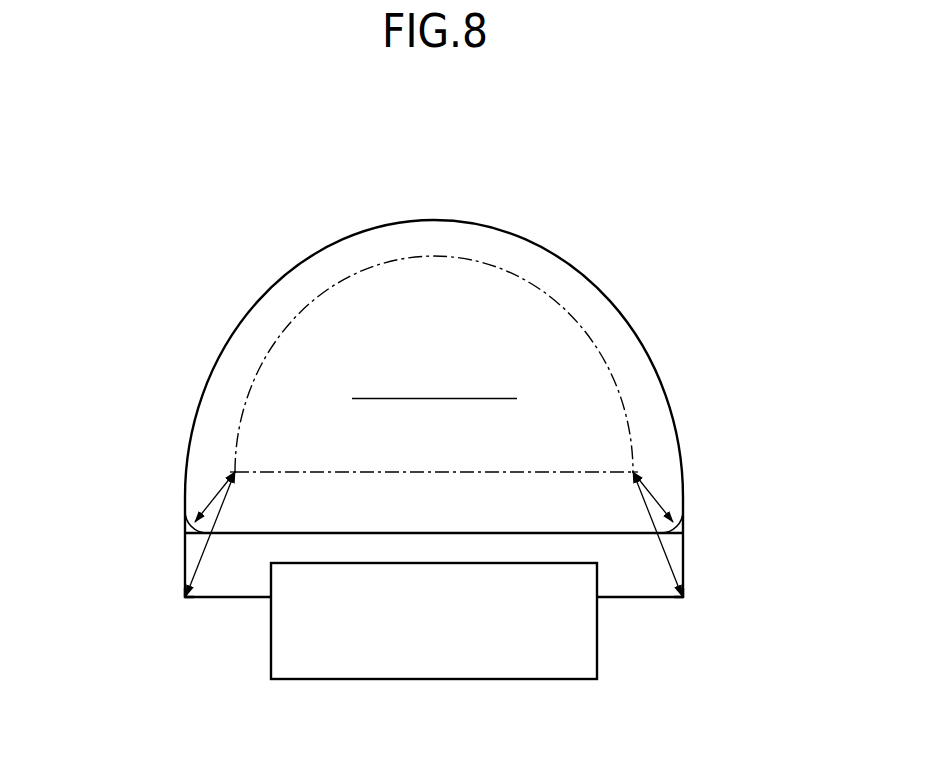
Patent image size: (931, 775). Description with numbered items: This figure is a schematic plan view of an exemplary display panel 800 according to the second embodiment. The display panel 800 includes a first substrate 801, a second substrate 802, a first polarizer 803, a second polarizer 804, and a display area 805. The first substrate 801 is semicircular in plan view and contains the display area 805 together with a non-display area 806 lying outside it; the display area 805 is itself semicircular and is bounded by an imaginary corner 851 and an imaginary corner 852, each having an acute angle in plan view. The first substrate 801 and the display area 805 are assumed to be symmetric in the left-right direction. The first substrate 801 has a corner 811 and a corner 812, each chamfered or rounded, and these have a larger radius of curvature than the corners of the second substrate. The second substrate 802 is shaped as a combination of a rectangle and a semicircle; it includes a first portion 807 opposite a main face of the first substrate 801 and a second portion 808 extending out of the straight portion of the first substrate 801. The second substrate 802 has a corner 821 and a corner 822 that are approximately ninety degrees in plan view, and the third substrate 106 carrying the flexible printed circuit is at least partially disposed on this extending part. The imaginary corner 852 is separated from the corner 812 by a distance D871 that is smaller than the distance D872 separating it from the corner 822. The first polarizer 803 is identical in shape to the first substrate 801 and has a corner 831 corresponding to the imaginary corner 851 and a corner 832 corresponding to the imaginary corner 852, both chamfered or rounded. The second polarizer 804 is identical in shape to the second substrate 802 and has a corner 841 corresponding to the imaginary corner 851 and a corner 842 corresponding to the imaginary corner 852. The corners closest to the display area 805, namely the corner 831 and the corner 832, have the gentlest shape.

The display panel 800 is at (322, 173).
The display area 805 is at (484, 312).
The first substrate 801 is at (451, 373).
The first polarizer 803 is at (451, 373).
The first portion 807 is at (451, 373).
The non-display area 806 is at (262, 288).
The imaginary corner 851 is at (632, 468).
The imaginary corner 852 is at (236, 468).
The distance D871 is at (209, 503).
The distance D872 is at (216, 518).
The corner 811 is at (739, 547).
The corner 831 is at (684, 540).
The corner 812 is at (127, 547).
The corner 832 is at (184, 540).
The corner 821 is at (737, 626).
The corner 841 is at (683, 600).
The corner 822 is at (139, 625).
The corner 842 is at (185, 600).
The second substrate 802 is at (232, 655).
The second polarizer 804 is at (237, 600).
The second portion 808 is at (622, 580).
The third substrate 106 is at (445, 652).